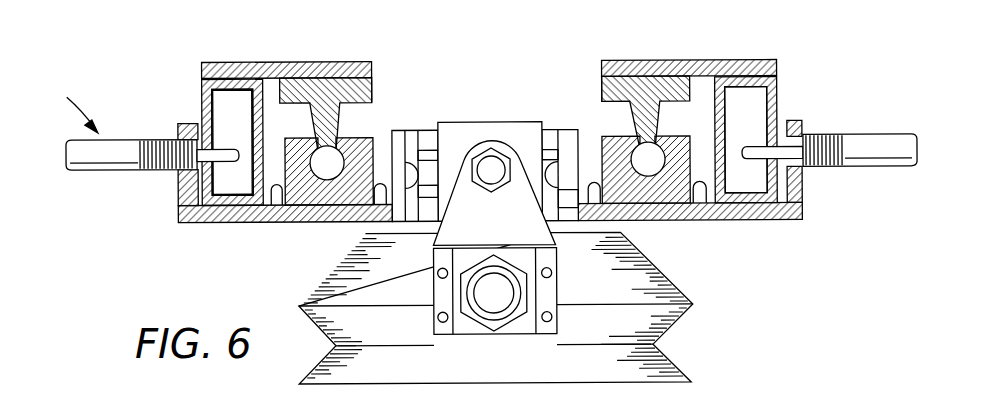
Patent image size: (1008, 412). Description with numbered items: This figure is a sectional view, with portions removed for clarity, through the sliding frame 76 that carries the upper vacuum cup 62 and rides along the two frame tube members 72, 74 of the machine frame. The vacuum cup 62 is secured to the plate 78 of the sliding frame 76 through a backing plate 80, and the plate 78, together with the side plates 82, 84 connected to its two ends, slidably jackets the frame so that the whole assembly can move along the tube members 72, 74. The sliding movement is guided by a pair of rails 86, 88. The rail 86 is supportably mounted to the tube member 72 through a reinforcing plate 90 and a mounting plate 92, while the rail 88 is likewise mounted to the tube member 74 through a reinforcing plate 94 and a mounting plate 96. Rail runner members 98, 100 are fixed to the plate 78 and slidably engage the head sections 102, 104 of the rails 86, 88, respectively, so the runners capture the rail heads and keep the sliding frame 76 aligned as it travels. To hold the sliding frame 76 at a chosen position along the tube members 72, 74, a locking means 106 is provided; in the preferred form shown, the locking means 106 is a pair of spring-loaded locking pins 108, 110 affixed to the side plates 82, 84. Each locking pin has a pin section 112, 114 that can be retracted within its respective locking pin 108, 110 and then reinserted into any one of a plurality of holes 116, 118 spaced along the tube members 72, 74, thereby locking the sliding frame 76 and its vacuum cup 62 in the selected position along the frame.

The upper vacuum cup 62 is at (673, 362).
The frame tube member 72 is at (202, 92).
The frame tube member 74 is at (778, 88).
The sliding frame 76 is at (745, 222).
The plate 78 is at (208, 222).
The backing plate 80 is at (566, 228).
The side plate 82 is at (178, 193).
The side plate 84 is at (803, 176).
The rail 86 is at (318, 77).
The rail 88 is at (653, 77).
The reinforcing plate 90 is at (248, 61).
The mounting plate 92 is at (373, 86).
The reinforcing plate 94 is at (706, 61).
The mounting plate 96 is at (602, 86).
The rail runner member 98 is at (308, 193).
The rail runner member 100 is at (668, 190).
The head section 102 is at (346, 137).
The head section 104 is at (630, 137).
The locking means 106 is at (63, 108).
The spring-loaded locking pin 108 is at (80, 170).
The spring-loaded locking pin 110 is at (873, 134).
The pin section 112 is at (231, 147).
The pin section 114 is at (742, 150).
The holes 116 is at (203, 128).
The holes 118 is at (770, 150).